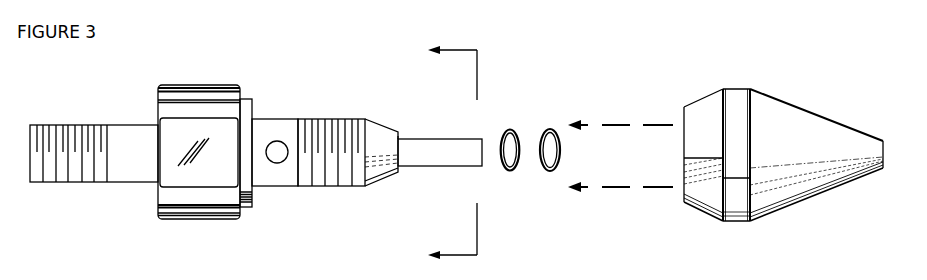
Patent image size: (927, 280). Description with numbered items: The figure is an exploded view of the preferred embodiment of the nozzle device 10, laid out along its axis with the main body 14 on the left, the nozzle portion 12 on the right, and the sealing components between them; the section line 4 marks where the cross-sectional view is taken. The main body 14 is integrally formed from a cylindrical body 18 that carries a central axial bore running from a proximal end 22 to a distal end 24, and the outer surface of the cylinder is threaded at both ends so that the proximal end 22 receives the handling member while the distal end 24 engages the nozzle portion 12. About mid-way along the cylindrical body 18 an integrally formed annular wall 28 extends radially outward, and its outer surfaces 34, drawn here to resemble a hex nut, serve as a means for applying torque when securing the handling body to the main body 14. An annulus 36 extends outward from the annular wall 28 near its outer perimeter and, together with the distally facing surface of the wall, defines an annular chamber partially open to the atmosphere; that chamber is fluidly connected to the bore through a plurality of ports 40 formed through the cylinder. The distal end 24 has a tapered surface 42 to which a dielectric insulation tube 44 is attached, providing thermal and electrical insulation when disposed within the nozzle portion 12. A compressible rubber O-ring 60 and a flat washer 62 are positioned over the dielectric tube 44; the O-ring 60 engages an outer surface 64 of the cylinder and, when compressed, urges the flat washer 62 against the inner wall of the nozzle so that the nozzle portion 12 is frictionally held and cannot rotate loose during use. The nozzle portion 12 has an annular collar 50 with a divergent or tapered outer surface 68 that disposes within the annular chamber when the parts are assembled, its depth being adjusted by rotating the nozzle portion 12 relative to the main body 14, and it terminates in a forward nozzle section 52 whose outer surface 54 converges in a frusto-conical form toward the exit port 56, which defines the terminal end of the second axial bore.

The section line 4- 4 is at (445, 153).
The nozzle device 10 is at (770, 254).
The nozzle portion 12 is at (803, 84).
The main body 14 is at (125, 108).
The cylindrical body 18 is at (123, 168).
The proximal end 22 is at (28, 137).
The distal end 24 is at (398, 132).
The annular wall 28 is at (248, 92).
The outer surfaces 34 is at (199, 152).
The annulus 36 is at (252, 103).
The ports 40 is at (277, 163).
The tapered surface 42 is at (383, 182).
The dielectric insulation tube 44 is at (438, 158).
The annular collar 50 is at (683, 122).
The forward nozzle section 52 is at (872, 132).
The outer surface 54 is at (843, 182).
The exit port 56 is at (885, 150).
The O-ring 60 is at (510, 128).
The flat washer 62 is at (555, 128).
The outer surface 64 is at (400, 137).
The tapered outer surface 68 is at (705, 210).